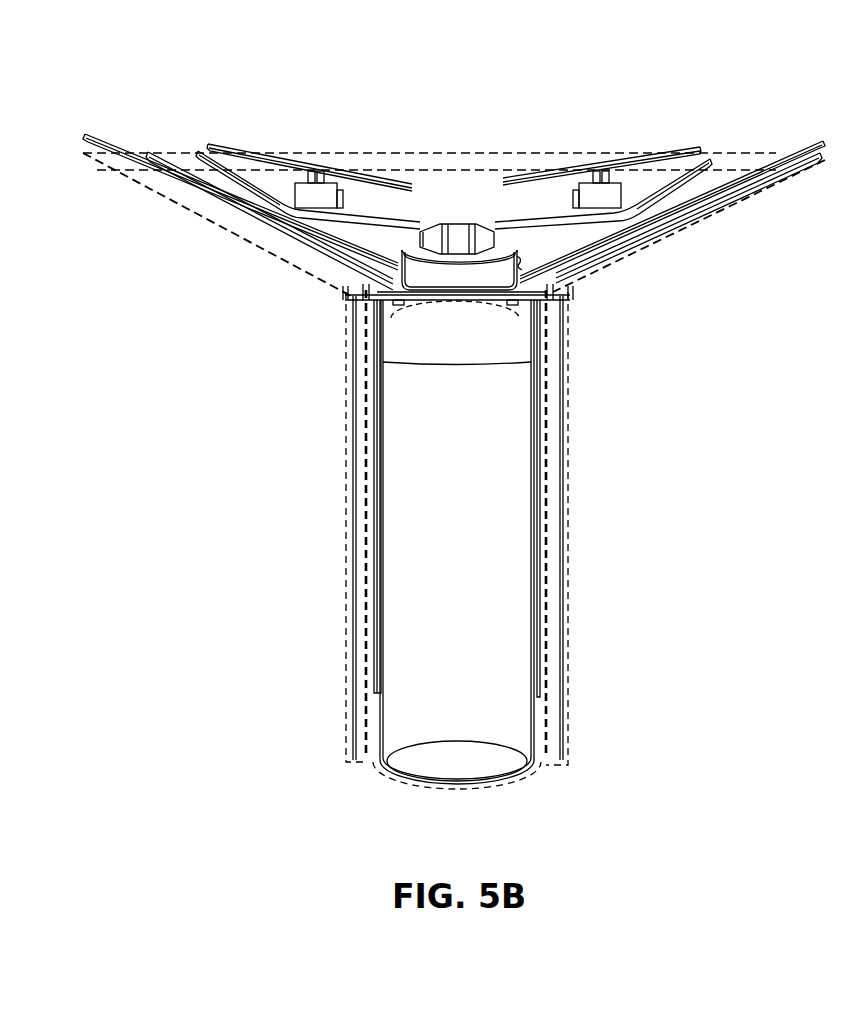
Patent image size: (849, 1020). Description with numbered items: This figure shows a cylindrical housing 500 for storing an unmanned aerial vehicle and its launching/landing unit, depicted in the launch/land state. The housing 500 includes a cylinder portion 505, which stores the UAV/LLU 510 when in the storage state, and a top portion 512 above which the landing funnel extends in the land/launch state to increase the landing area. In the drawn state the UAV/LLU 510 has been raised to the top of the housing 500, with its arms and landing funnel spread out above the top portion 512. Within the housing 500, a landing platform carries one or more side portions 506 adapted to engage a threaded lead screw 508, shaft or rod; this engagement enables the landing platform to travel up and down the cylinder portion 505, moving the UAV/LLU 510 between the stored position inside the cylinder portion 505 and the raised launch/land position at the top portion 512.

The housing 500 is at (135, 93).
The cylinder portion 505 is at (417, 762).
The side portion 506 is at (343, 476).
The threaded lead screw 508 is at (378, 382).
The UAV/LLU 510 is at (398, 127).
The top portion 512 is at (583, 282).